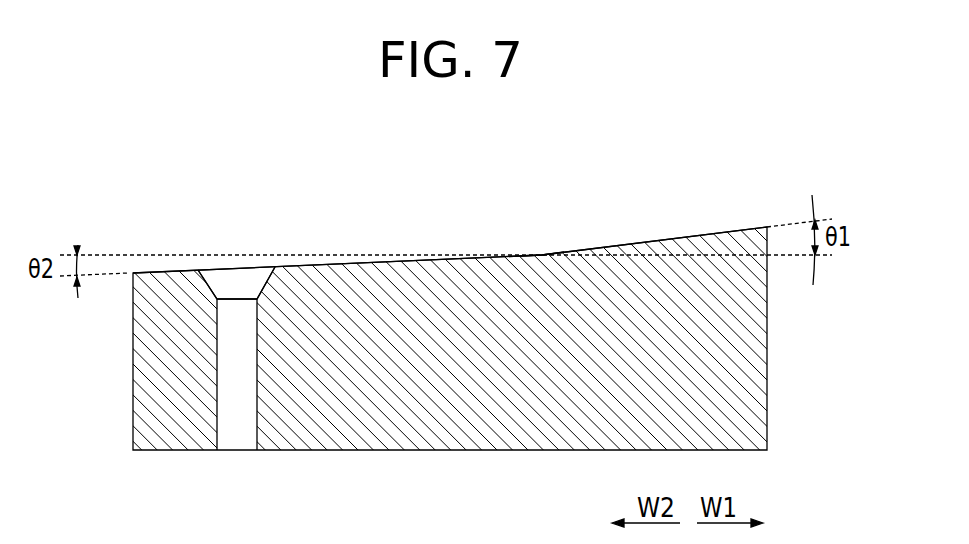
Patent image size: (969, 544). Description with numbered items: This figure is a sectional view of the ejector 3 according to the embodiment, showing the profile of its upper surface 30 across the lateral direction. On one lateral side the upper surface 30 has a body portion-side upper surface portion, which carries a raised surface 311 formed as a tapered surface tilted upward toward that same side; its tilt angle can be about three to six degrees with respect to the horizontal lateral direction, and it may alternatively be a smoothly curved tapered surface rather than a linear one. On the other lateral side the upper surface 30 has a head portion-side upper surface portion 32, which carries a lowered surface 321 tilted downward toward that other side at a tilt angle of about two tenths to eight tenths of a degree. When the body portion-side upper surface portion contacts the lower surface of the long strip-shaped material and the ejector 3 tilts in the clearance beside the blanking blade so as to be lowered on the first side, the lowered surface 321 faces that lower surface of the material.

The ejector 3 is at (675, 378).
The upper surface 30 is at (527, 245).
The raised surface 311 is at (681, 237).
The head portion-side upper surface portion 32 is at (365, 261).
The lowered surface 321 is at (178, 271).